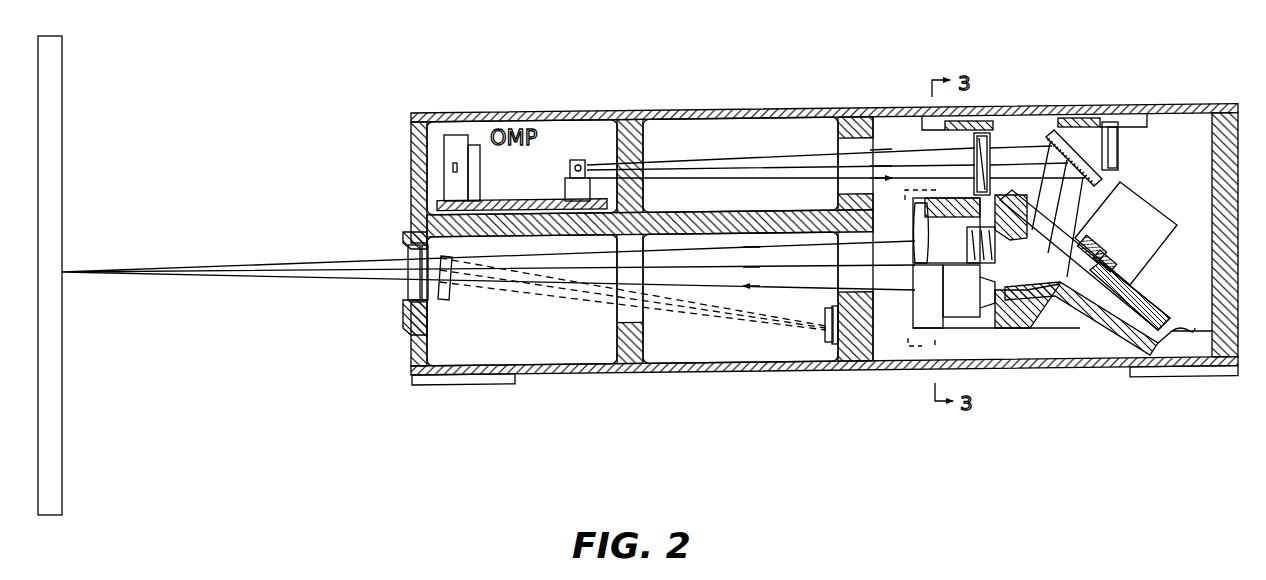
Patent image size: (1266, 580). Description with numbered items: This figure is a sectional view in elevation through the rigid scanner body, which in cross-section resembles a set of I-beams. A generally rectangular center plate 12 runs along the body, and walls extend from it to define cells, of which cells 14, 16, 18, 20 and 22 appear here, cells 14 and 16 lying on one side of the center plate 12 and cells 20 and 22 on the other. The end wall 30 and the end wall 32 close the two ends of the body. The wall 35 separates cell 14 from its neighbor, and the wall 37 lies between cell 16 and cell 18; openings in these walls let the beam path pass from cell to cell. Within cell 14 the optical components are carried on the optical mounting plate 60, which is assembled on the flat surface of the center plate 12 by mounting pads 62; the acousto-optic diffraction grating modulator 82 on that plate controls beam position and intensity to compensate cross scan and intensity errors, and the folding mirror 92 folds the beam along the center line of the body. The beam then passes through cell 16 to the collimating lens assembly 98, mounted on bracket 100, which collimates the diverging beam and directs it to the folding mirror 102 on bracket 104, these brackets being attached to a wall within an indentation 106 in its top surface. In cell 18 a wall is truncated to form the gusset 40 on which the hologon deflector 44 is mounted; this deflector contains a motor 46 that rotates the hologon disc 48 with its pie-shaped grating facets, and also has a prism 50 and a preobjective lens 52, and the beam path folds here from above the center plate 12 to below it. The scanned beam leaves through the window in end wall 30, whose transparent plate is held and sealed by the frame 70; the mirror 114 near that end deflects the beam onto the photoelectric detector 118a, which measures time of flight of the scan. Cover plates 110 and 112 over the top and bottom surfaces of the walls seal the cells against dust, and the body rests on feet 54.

The center plate 12 is at (718, 214).
The cell 14 is at (608, 146).
The cell 16 is at (791, 143).
The cell 18 is at (1195, 138).
The cell 20 is at (558, 340).
The cell 22 is at (729, 350).
The end wall 30 is at (411, 157).
The end wall 32 is at (1212, 230).
The common wall 35 is at (643, 128).
The wall 37 is at (876, 113).
The gusset 40 is at (1193, 330).
The hologon deflector 44 is at (1062, 326).
The motor 46 is at (1157, 203).
The hologon disc 48 is at (1135, 306).
The prism 50 is at (1010, 275).
The preobjective lens 52 is at (915, 224).
The mounting foot 54 is at (455, 385).
The optical mounting plate 60 is at (410, 290).
The mounting pads 62 is at (566, 208).
The frame 70 is at (408, 322).
The acousto-optic diffraction grating modulator 82 is at (462, 133).
The folding mirror 92 is at (577, 160).
The collimating lens assembly 98 is at (990, 148).
The bracket 100 is at (985, 121).
The folding mirror 102 is at (1118, 160).
The bracket 104 is at (1085, 118).
The indentation 106 is at (1055, 118).
The cover plate 110 is at (1160, 113).
The cover plate 112 is at (1075, 375).
The mirror 114 is at (452, 295).
The photoelectric detector 118a is at (828, 342).